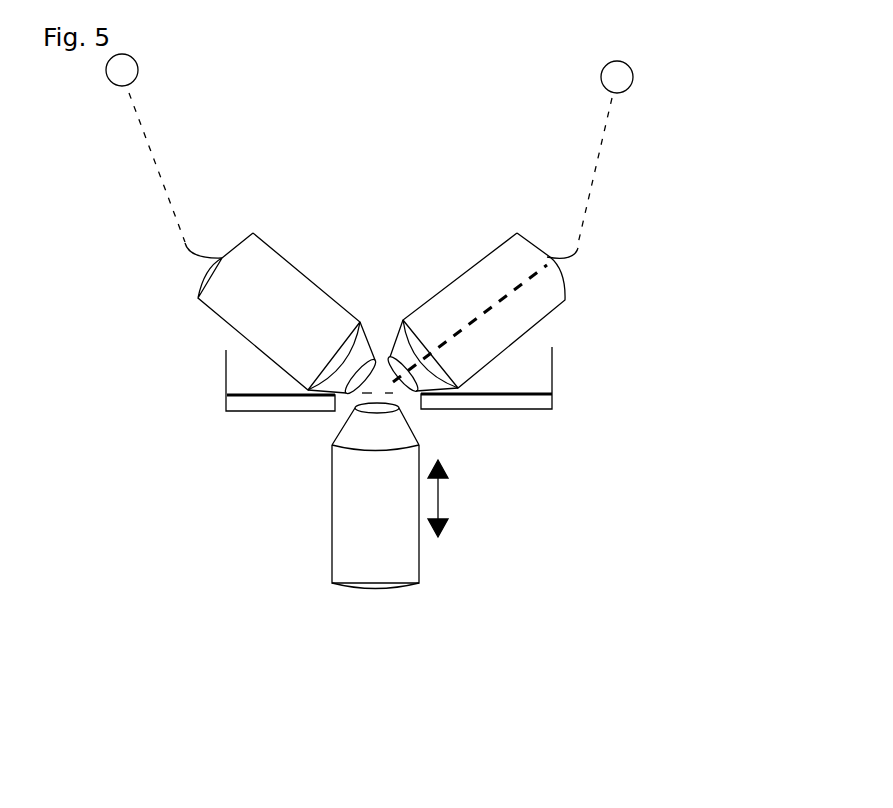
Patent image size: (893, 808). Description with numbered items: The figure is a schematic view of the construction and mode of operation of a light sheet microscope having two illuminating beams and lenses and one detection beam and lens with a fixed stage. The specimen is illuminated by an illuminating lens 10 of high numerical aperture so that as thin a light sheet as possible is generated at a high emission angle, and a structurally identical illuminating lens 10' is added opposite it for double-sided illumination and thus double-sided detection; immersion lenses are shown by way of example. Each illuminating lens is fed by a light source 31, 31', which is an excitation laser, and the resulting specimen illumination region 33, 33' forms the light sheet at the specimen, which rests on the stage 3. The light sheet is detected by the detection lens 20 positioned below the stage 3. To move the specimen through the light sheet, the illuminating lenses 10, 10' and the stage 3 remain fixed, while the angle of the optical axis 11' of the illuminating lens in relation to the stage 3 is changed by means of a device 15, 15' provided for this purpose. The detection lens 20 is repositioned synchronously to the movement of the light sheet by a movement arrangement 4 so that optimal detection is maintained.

The stage 3 is at (223, 373).
The movement arrangement 4 is at (445, 498).
The illuminating lens 10 is at (288, 275).
The illuminating lens 10' is at (474, 274).
The optical axis 11' is at (470, 299).
The device for changing the angle 15 is at (164, 251).
The device for changing the angle 15' is at (611, 245).
The detection lens 20 is at (383, 575).
The light source 31 is at (155, 54).
The light source 31' is at (651, 59).
The specimen illumination region 33 is at (118, 167).
The specimen illumination region 33' is at (661, 173).